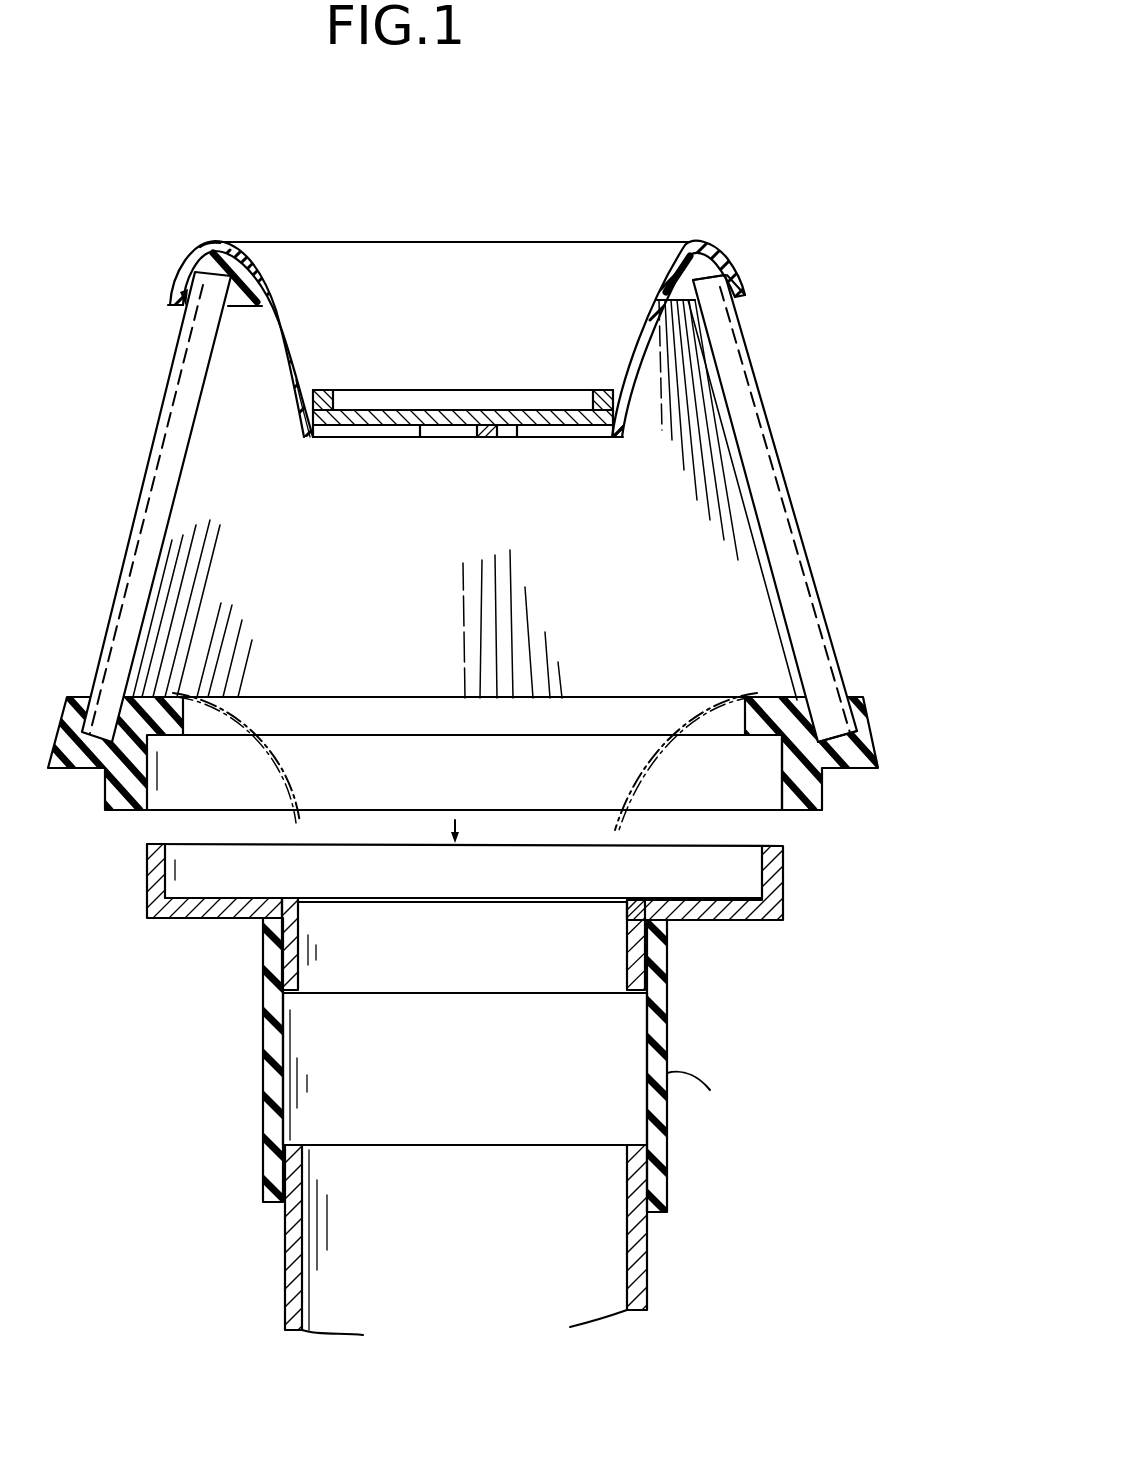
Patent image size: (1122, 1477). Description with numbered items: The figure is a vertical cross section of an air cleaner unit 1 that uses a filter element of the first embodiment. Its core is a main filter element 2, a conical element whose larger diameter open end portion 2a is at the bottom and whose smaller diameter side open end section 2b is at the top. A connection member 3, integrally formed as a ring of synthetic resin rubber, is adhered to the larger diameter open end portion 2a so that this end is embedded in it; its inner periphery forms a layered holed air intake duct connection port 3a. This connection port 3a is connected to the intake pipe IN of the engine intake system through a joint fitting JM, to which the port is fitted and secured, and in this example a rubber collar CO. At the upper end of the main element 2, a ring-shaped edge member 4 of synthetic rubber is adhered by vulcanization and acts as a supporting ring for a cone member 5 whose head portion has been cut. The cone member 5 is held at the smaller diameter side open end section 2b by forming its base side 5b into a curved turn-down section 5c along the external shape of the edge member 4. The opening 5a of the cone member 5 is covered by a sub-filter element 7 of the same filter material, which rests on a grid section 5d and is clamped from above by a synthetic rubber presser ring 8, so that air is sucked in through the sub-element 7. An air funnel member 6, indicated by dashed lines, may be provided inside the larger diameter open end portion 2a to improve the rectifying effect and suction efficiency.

The air cleaner unit 1 is at (135, 260).
The main filter element 2 is at (780, 408).
The larger diameter open end portion 2a is at (850, 702).
The smaller diameter side open end section 2b is at (710, 297).
The connection member 3 is at (886, 746).
The air intake duct connection port 3a is at (782, 768).
The edge member 4 is at (188, 305).
The cone member 5 is at (642, 248).
The opening 5a is at (303, 443).
The base side 5b is at (218, 242).
The curved turn-down section 5c is at (187, 260).
The grid section 5d is at (490, 427).
The air funnel member 6 is at (630, 770).
The sub-filter element 7 is at (437, 413).
The presser ring 8 is at (610, 410).
The joint fitting JM is at (747, 920).
The rubber collar CO is at (667, 1075).
The intake pipe IN is at (650, 1278).